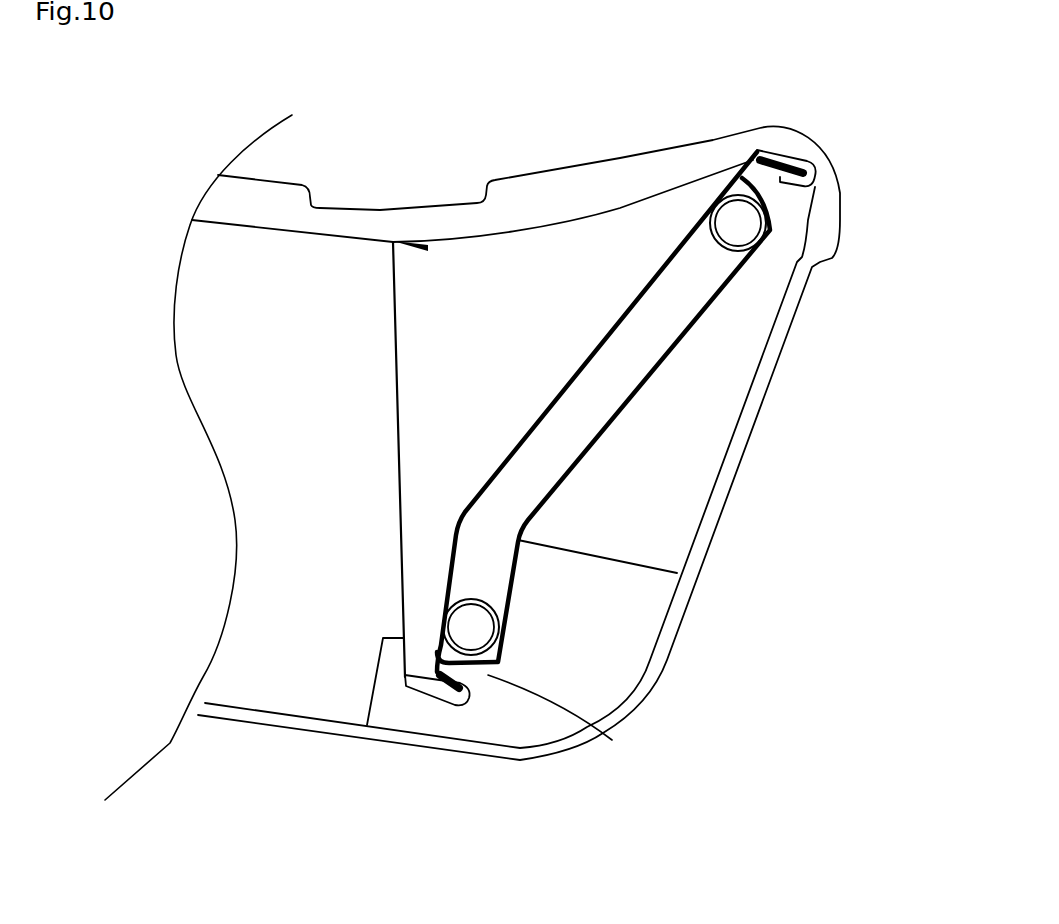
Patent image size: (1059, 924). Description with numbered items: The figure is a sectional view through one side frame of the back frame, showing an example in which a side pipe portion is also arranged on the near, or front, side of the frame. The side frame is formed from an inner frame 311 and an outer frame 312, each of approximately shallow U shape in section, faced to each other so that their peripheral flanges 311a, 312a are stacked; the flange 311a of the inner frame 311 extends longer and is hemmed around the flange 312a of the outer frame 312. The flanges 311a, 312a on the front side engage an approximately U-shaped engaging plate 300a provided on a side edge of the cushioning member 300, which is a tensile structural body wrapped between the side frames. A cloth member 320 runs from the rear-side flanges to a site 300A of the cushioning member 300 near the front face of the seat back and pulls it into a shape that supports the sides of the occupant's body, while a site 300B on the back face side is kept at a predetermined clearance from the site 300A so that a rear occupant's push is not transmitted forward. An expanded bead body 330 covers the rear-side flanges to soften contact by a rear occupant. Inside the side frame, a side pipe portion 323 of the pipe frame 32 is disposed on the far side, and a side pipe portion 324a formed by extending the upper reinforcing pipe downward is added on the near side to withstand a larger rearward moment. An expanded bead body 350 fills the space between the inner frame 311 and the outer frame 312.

The cushioning member 300 is at (452, 203).
The site of the cushioning member positioned near the front face side 300A is at (537, 173).
The engaging plate 300a is at (802, 163).
The site of the cushioning member positioned on the back face side 300B is at (250, 727).
The inner frame 311 is at (557, 393).
The flange of the inner frame 311a is at (750, 160).
The outer frame 312 is at (612, 425).
The flange of the outer frame 312a is at (760, 170).
The cloth member 320 is at (400, 555).
The pipe frame 32 is at (401, 623).
The side pipe portion 323 is at (447, 632).
The side pipe portion 324a is at (708, 228).
The expanded bead body 330 is at (473, 720).
The expanded bead body 350 is at (603, 412).